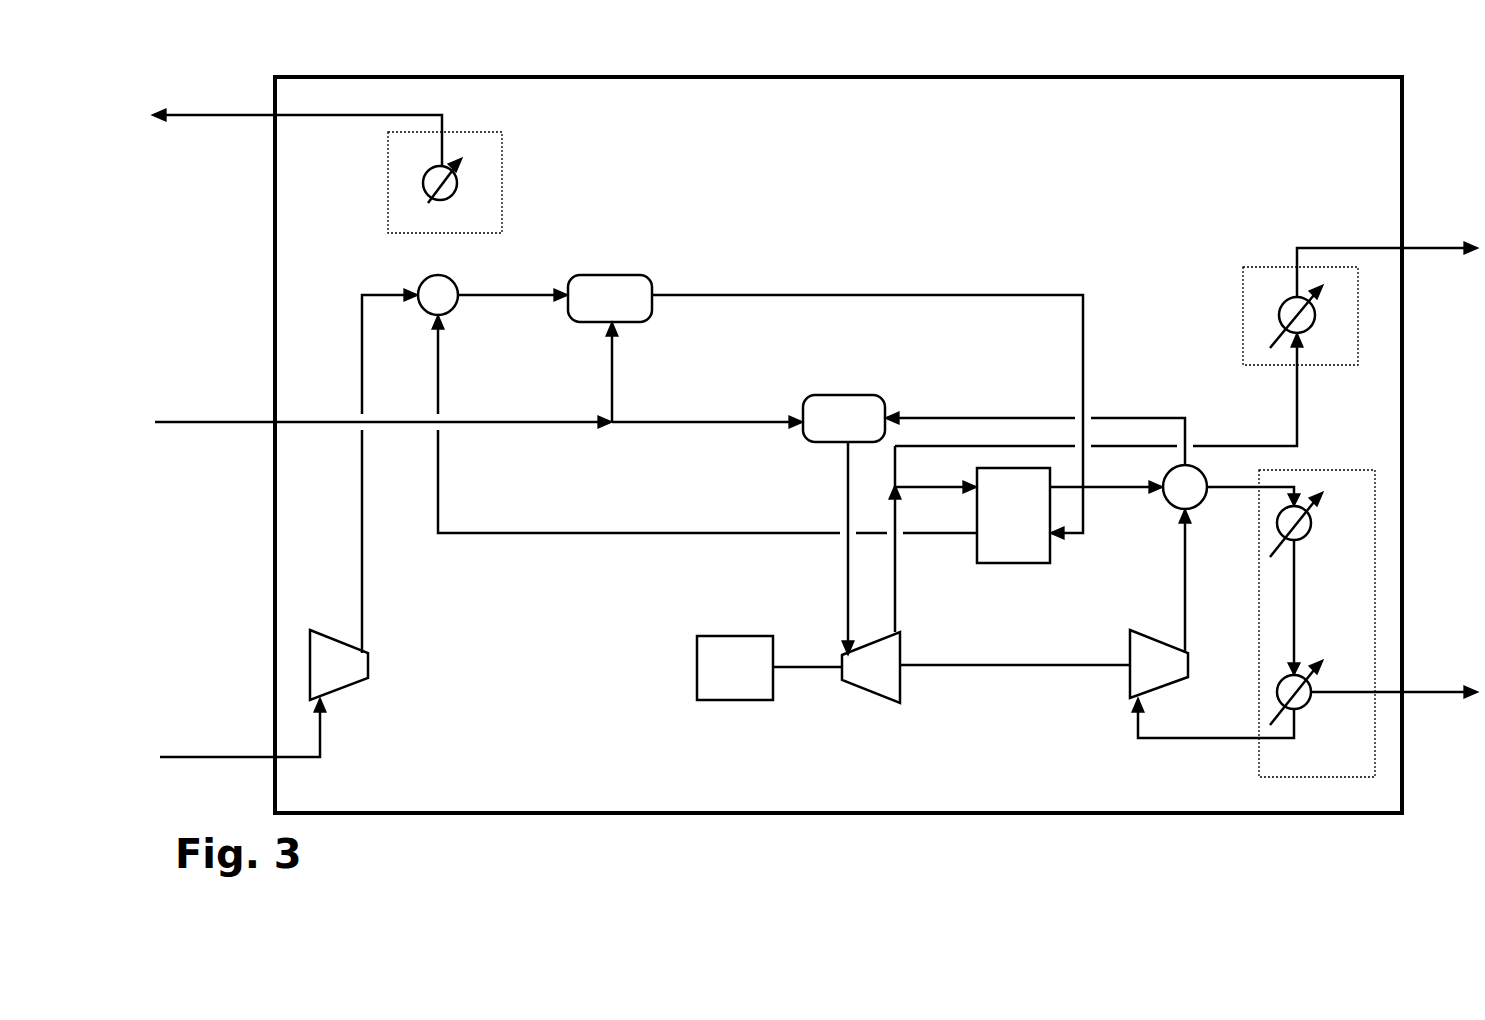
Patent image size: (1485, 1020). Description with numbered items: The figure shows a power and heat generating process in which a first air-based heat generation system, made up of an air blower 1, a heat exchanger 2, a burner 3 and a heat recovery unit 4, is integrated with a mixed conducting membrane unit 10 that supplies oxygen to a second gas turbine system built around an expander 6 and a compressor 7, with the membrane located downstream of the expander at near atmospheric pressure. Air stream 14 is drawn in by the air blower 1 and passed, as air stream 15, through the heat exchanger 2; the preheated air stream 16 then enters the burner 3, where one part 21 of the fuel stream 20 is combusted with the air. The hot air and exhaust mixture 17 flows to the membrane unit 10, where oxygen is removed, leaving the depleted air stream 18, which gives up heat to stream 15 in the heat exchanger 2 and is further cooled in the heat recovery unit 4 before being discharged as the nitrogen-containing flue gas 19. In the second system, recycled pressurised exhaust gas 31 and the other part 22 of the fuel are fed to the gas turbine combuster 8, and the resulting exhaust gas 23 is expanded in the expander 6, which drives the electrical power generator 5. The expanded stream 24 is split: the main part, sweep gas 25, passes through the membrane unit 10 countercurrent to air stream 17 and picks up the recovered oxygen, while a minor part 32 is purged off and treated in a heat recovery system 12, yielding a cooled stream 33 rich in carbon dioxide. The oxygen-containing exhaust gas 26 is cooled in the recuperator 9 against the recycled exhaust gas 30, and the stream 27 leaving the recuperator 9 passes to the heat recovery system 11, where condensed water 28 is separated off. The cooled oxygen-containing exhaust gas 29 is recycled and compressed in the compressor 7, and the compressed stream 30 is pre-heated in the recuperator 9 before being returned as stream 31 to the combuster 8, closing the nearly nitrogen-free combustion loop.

The air blower 1 is at (339, 665).
The heat exchanger 2 is at (438, 295).
The burner 3 is at (610, 298).
The heat recovery unit 4 is at (445, 182).
The electrical power generator 5 is at (735, 668).
The expander 6 is at (871, 667).
The compressor 7 is at (1159, 664).
The gas turbine combuster 8 is at (844, 418).
The recuperator 9 is at (1185, 487).
The mixed conducting membrane unit 10 is at (1013, 515).
The heat recovery system 11 is at (1317, 623).
The heat recovery system 12 is at (1300, 316).
The air stream 14 is at (243, 734).
The air stream 15 is at (384, 471).
The preheated air stream 16 is at (513, 296).
The hot air/exhaust mixture stream 17 is at (867, 411).
The depleted air stream 18 is at (704, 432).
The cooled nitrogen-containing exhaust or flue gas stream 19 is at (297, 134).
The fuel stream 20 is at (383, 423).
The fuel stream part 21 is at (612, 372).
The fuel stream 22 is at (707, 421).
The exhaust gas stream 23 is at (849, 548).
The expanded exhaust gas stream 24 is at (897, 539).
The sweep gas stream 25 is at (936, 488).
The oxygen containing exhaust gas stream 26 is at (1106, 488).
The exhaust gas stream 27 is at (1253, 490).
The condensed water stream 28 is at (1394, 693).
The cooled oxygen containing exhaust gas stream 29 is at (1213, 725).
The recycled exhaust gas stream 30 is at (1184, 581).
The recycled pressurised exhaust gas stream 31 is at (1035, 436).
The purge stream 32 is at (1105, 389).
The cooled CO2-rich stream 33 is at (1387, 266).